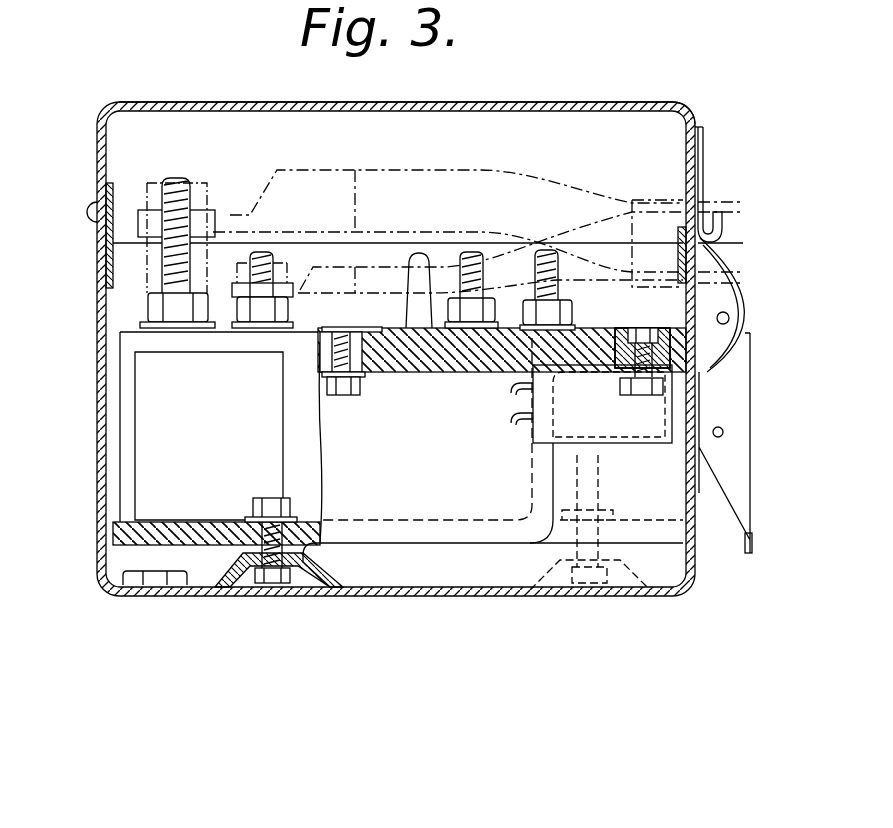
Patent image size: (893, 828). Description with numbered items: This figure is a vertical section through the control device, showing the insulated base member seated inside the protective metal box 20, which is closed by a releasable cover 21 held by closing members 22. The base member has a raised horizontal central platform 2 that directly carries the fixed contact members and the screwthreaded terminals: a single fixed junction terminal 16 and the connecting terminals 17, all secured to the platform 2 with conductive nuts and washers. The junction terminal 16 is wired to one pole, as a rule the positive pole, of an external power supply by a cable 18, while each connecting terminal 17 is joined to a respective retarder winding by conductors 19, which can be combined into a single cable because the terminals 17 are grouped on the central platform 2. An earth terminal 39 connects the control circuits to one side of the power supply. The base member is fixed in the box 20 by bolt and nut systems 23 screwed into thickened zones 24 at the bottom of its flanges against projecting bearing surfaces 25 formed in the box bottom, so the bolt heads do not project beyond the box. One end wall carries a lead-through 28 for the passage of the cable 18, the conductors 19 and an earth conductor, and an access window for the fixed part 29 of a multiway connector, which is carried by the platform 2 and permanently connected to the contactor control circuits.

The central platform 2 is at (450, 360).
The fixed junction terminal 16 is at (182, 200).
The connecting terminals 17 is at (262, 277).
The cable 18 is at (535, 188).
The conductors 19 is at (380, 277).
The protective metal box 20 is at (450, 589).
The releasable cover 21 is at (660, 104).
The closing members 22 is at (738, 348).
The bolt and nut systems 23 is at (272, 508).
The thickened zones 24 is at (247, 548).
The projecting bearing surfaces 25 is at (253, 568).
The lead-through 28 is at (712, 204).
The fixed part of multiway connector 29 is at (600, 425).
The earth terminal 39 is at (557, 285).